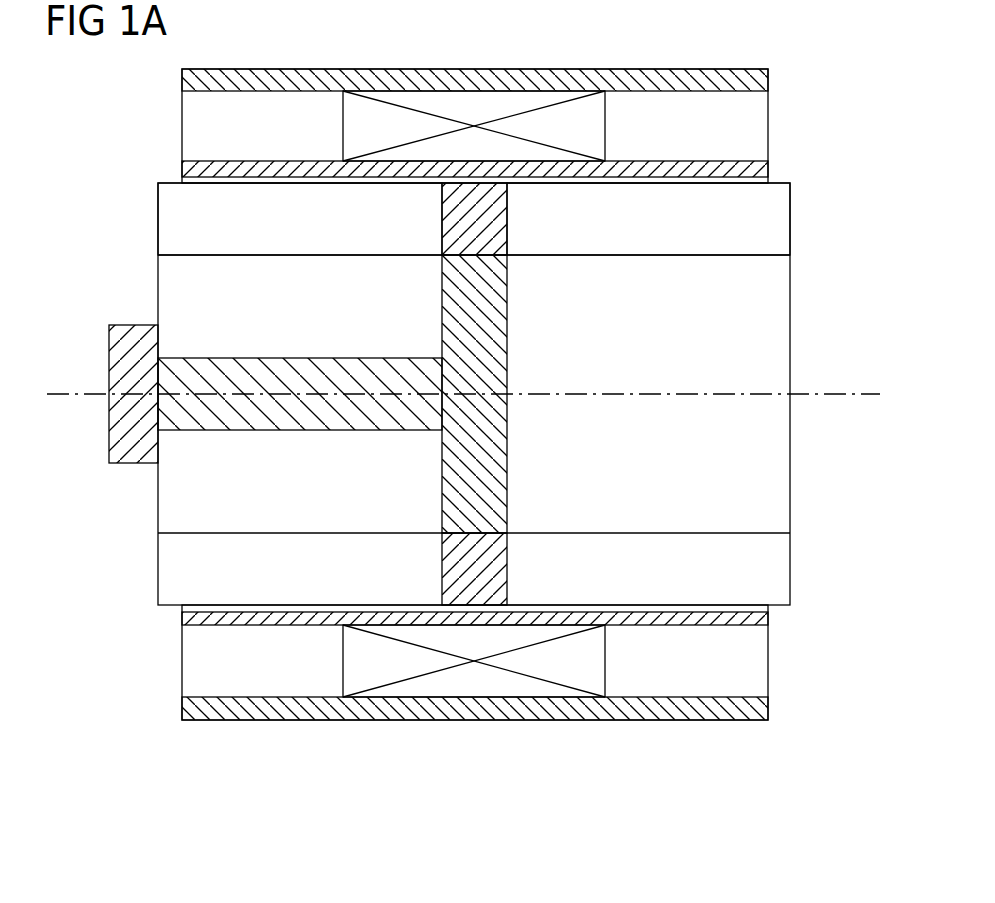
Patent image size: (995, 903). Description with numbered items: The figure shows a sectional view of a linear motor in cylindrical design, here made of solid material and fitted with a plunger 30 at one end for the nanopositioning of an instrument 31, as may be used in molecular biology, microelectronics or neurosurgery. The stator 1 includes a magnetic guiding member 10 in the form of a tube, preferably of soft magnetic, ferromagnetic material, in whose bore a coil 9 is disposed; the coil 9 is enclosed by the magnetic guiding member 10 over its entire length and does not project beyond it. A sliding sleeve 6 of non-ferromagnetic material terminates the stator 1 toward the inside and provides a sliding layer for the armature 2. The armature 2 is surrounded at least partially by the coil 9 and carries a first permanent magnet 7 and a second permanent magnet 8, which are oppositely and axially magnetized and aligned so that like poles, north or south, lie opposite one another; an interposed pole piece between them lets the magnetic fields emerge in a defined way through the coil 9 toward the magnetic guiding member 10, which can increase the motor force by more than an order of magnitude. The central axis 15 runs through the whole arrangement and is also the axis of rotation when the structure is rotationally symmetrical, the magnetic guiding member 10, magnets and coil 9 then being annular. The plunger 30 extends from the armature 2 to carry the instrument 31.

The stator 1 is at (740, 125).
The armature 2 is at (494, 394).
The sliding sleeve 6 is at (770, 620).
The first permanent magnet 7 is at (290, 244).
The second permanent magnet 8 is at (632, 243).
The coil 9 is at (478, 688).
The magnetic guiding member 10 is at (363, 710).
The central axis 15 is at (62, 398).
The plunger 30 is at (248, 372).
The instrument 31 is at (133, 335).